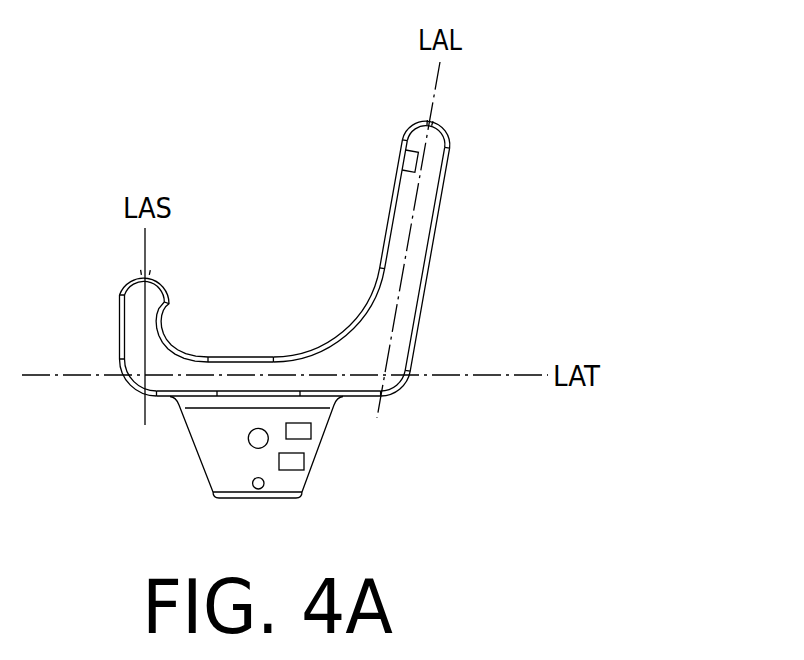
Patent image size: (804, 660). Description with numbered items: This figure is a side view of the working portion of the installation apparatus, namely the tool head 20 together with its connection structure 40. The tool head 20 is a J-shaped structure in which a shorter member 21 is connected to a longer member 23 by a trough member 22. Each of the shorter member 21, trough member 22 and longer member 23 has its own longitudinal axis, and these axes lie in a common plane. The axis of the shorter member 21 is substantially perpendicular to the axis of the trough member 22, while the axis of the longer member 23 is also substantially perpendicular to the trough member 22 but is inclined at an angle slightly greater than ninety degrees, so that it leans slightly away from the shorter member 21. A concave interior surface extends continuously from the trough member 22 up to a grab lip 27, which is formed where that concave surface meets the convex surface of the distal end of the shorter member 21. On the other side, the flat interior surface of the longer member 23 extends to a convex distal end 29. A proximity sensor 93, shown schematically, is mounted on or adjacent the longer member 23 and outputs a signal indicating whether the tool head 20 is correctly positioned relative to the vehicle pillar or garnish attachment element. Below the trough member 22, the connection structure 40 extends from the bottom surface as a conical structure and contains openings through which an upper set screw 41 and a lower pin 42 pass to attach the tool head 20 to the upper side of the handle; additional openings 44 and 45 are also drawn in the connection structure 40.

The tool head 20 is at (388, 207).
The shorter member 21 is at (135, 320).
The trough member 22 is at (239, 369).
The longer member 23 is at (425, 205).
The grab lip 27 is at (168, 275).
The convex distal end 29 is at (431, 119).
The proximity sensor 93 is at (408, 160).
The connection structure 40 is at (290, 483).
The upper set screw 41 is at (248, 438).
The lower pin 42 is at (253, 483).
The slot 44 is at (303, 432).
The slot 45 is at (297, 462).